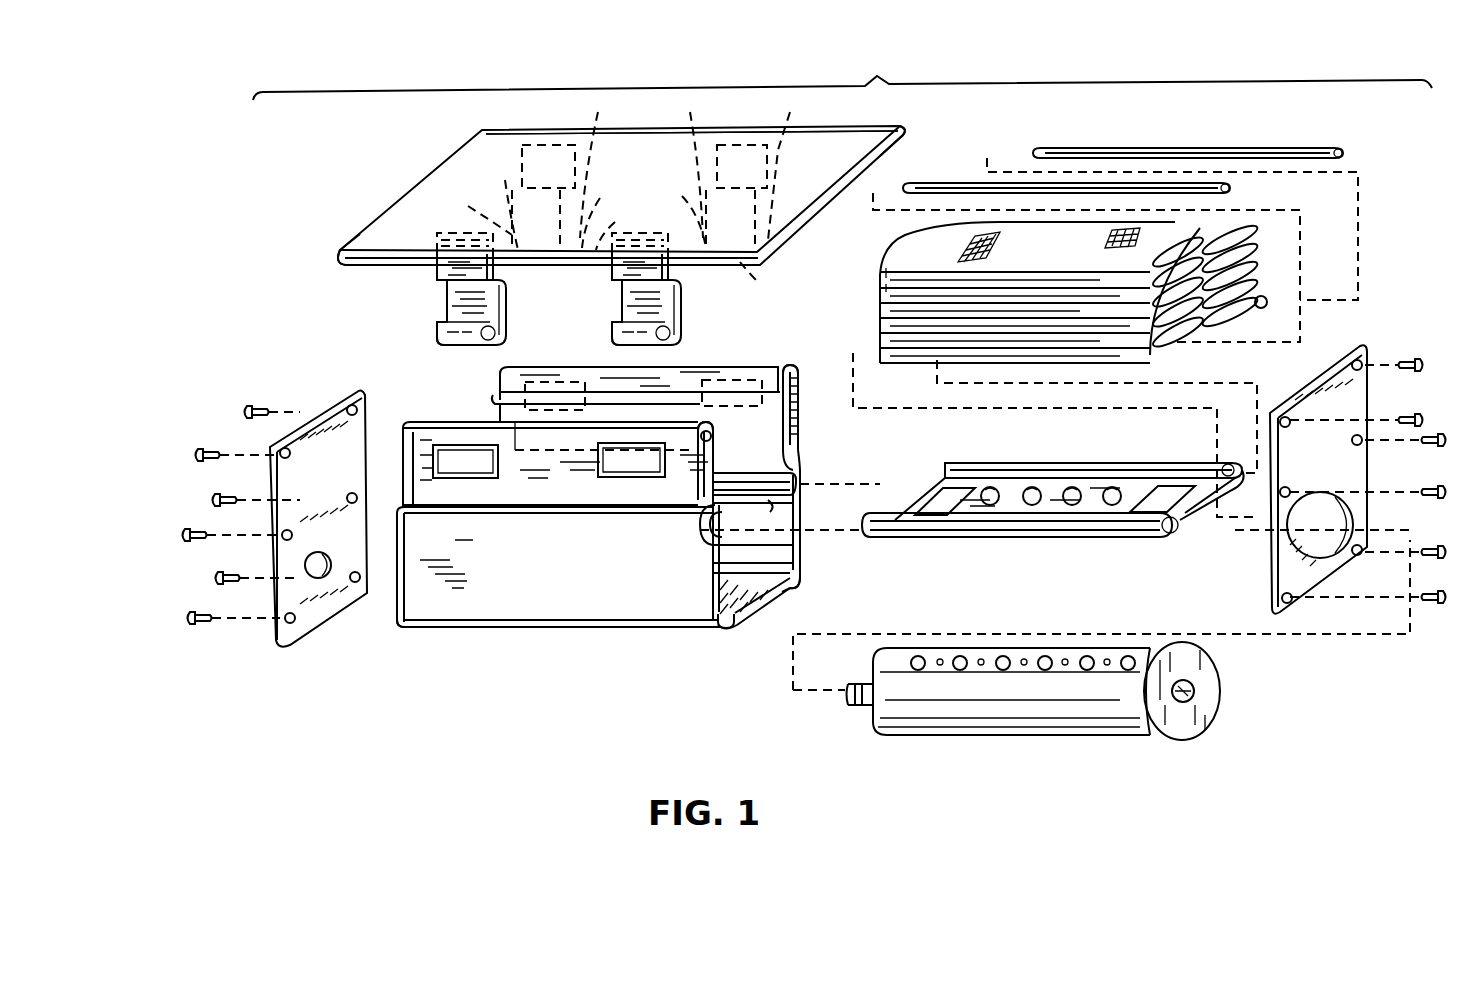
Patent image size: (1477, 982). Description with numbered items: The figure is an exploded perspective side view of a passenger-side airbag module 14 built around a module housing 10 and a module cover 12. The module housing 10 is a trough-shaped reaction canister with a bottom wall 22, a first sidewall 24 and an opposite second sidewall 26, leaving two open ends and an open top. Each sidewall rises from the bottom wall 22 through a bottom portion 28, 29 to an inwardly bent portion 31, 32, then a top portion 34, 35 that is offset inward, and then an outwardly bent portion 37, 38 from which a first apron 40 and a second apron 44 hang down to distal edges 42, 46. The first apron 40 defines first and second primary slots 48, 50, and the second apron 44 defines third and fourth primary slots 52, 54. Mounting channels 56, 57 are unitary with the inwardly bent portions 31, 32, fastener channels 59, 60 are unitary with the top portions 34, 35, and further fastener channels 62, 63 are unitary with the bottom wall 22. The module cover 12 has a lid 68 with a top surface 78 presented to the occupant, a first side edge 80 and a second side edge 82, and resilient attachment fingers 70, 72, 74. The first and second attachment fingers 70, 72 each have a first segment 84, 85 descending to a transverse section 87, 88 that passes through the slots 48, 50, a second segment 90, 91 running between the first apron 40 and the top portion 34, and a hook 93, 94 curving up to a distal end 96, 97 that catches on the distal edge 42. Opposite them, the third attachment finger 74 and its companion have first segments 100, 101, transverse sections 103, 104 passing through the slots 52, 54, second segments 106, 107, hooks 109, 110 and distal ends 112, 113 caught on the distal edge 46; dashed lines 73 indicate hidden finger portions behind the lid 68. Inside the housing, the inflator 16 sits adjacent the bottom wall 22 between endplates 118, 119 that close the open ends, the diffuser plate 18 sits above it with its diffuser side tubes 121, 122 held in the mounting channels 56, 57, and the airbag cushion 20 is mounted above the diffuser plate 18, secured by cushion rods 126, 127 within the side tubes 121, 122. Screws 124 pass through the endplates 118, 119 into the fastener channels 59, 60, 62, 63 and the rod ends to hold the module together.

The module housing 10 is at (498, 634).
The module cover 12 is at (748, 126).
The passenger-side airbag module 14 is at (842, 73).
The inflator 16 is at (1025, 737).
The diffuser plate 18 is at (1012, 543).
The inflatable airbag cushion 20 is at (912, 255).
The bottom wall 22 is at (758, 600).
The first sidewall 24 is at (551, 600).
The second sidewall 26 is at (812, 506).
The bottom portion of first sidewall 28 is at (705, 565).
The bottom portion of second sidewall 29 is at (800, 538).
The inwardly bent portion of first sidewall 31 is at (700, 545).
The inwardly bent portion of second sidewall 32 is at (802, 470).
The top portion of first sidewall 34 is at (699, 502).
The top portion of second sidewall 35 is at (800, 405).
The outwardly bent portion of first sidewall 37 is at (706, 418).
The outwardly bent portion of second sidewall 38 is at (794, 365).
The first apron 40 is at (530, 495).
The distal edge of first apron 42 is at (586, 496).
The second apron 44 is at (800, 380).
The distal edge of second apron 46 is at (800, 446).
The first primary slot 48 is at (486, 480).
The second primary slot 50 is at (640, 478).
The third primary slot 52 is at (553, 370).
The fourth primary slot 54 is at (745, 378).
The first mounting channel 56 is at (734, 522).
The second mounting channel 57 is at (778, 502).
The fastener channel 59 is at (716, 436).
The fastener channel 60 is at (774, 368).
The fastener channel 62 is at (733, 626).
The fastener channel 63 is at (778, 590).
The lid 68 is at (563, 126).
The first attachment finger 70 is at (440, 290).
The second attachment finger 72 is at (625, 288).
The hidden opening 73 is at (522, 155).
The third attachment finger 74 is at (788, 163).
The top surface 78 is at (630, 155).
The first side edge 80 is at (370, 265).
The second side edge 82 is at (876, 128).
The first segment of first attachment finger 84 is at (436, 268).
The first segment of second attachment finger 85 is at (613, 274).
The transverse section of first attachment finger 87 is at (494, 285).
The transverse section of second attachment finger 88 is at (670, 284).
The second segment of first attachment finger 90 is at (506, 302).
The second segment of second attachment finger 91 is at (682, 305).
The hook of first attachment finger 93 is at (476, 346).
The hook of second attachment finger 94 is at (628, 340).
The distal end of first attachment finger 96 is at (430, 326).
The distal end of second attachment finger 97 is at (673, 331).
The first segment of third attachment finger 100 is at (611, 165).
The first segment of fourth attachment finger 101 is at (684, 163).
The transverse section of third attachment finger 103 is at (492, 203).
The transverse section of fourth attachment finger 104 is at (705, 240).
The second segment of third attachment finger 106 is at (472, 214).
The second segment of fourth attachment finger 107 is at (674, 211).
The hook of third attachment finger 109 is at (625, 224).
The hook of fourth attachment finger 110 is at (767, 280).
The distal end of third attachment finger 112 is at (609, 211).
The distal end of fourth attachment finger 113 is at (768, 240).
The endplate 118 is at (338, 488).
The endplate 119 is at (1337, 458).
The diffuser side tube 121 is at (1142, 532).
The diffuser side tube 122 is at (1090, 463).
The screws 124 is at (218, 450).
The cushion rod 126 is at (958, 182).
The cushion rod 127 is at (1128, 147).